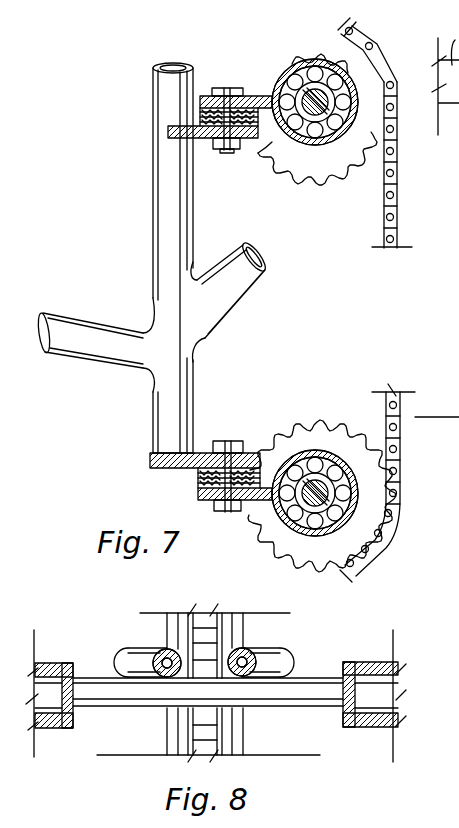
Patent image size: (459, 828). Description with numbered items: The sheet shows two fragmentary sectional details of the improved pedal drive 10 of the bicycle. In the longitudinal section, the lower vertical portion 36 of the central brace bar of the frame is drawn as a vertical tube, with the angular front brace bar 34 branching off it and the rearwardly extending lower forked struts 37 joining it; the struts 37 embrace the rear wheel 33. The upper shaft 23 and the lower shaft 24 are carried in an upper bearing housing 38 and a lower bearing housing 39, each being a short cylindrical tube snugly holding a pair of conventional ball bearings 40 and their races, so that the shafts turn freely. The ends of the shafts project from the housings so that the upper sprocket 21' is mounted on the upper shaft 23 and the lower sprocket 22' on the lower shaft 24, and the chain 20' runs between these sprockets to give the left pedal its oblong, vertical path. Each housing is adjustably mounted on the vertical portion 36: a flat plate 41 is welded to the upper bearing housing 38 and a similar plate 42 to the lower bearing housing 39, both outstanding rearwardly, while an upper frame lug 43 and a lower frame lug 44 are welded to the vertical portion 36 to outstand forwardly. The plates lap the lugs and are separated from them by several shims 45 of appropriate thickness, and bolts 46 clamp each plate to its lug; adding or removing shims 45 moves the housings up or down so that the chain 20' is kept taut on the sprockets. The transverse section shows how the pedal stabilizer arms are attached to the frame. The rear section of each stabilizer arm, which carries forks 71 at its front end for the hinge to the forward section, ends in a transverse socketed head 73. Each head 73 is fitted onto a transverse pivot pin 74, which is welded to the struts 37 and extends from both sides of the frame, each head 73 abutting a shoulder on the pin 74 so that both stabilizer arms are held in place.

In FIG. 7, the conveyor apparatus 10 is at (427, 370).
In FIG. 7, the chain 20' is at (375, 300).
In FIG. 7, the upper sprocket 21' is at (317, 137).
In FIG. 7, the lower sprocket 22' is at (300, 496).
In FIG. 7, the upper shaft 23 is at (332, 90).
In FIG. 7, the lower shaft 24 is at (328, 491).
In FIG. 8, the rear wheel 33 is at (240, 625).
In FIG. 7, the angular front brace bar 34 is at (246, 284).
In FIG. 7, the lower vertical portion 36 is at (162, 201).
In FIG. 7, the lower forked struts 37 is at (90, 334).
In FIG. 8, the lower forked struts 37 is at (124, 631).
In FIG. 7, the upper bearing housing 38 is at (300, 64).
In FIG. 7, the lower bearing housing 39 is at (295, 456).
In FIG. 7, the ball bearings 40 is at (315, 68).
In FIG. 7, the flat plate 41 is at (200, 96).
In FIG. 7, the plate 42 is at (212, 496).
In FIG. 7, the upper frame lug 43 is at (170, 133).
In FIG. 7, the lower frame lug 44 is at (160, 453).
In FIG. 7, the shims 45 is at (200, 118).
In FIG. 7, the bolts 46 is at (228, 90).
In FIG. 7, the forks 71 is at (458, 250).
In FIG. 8, the socketed head 73 is at (50, 663).
In FIG. 8, the transverse pivot pin 74 is at (272, 696).